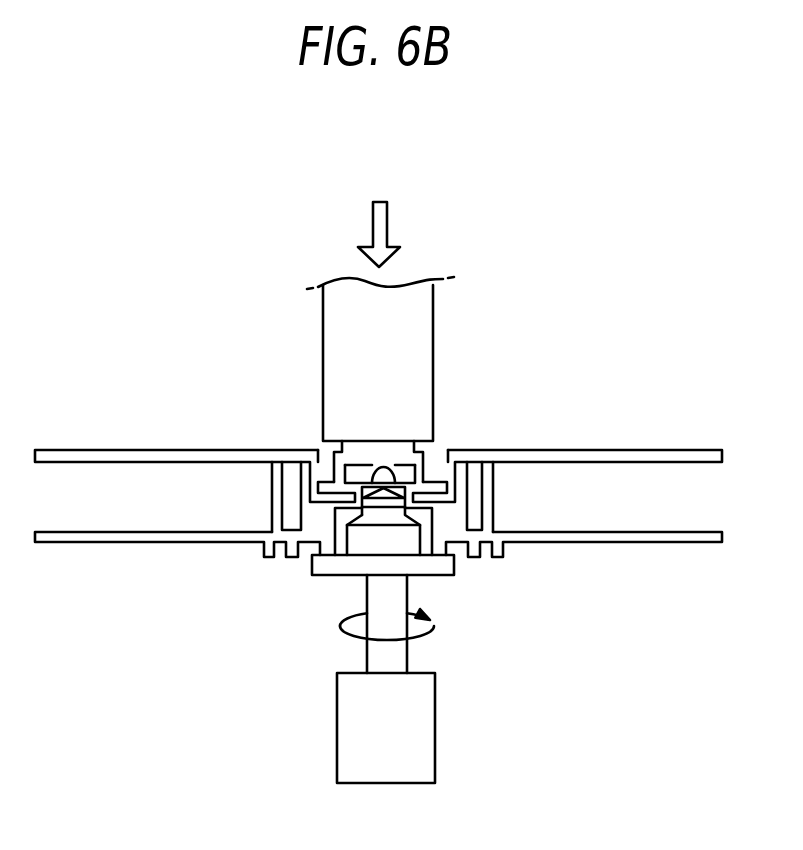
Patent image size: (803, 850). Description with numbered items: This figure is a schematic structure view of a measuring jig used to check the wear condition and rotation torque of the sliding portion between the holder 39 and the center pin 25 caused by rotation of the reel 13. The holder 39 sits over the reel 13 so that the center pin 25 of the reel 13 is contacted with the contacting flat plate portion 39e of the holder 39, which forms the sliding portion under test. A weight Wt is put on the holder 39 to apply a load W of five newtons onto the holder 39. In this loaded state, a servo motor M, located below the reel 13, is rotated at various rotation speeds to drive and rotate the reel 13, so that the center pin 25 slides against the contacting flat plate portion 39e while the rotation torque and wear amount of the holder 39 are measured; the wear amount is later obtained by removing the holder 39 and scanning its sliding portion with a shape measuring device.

The reel 13 is at (205, 443).
The center pin 25 is at (372, 462).
The holder 39 is at (424, 455).
The contacting flat plate portion 39e is at (386, 449).
The weight Wt is at (325, 362).
The load W is at (379, 220).
The servo motor M is at (386, 728).